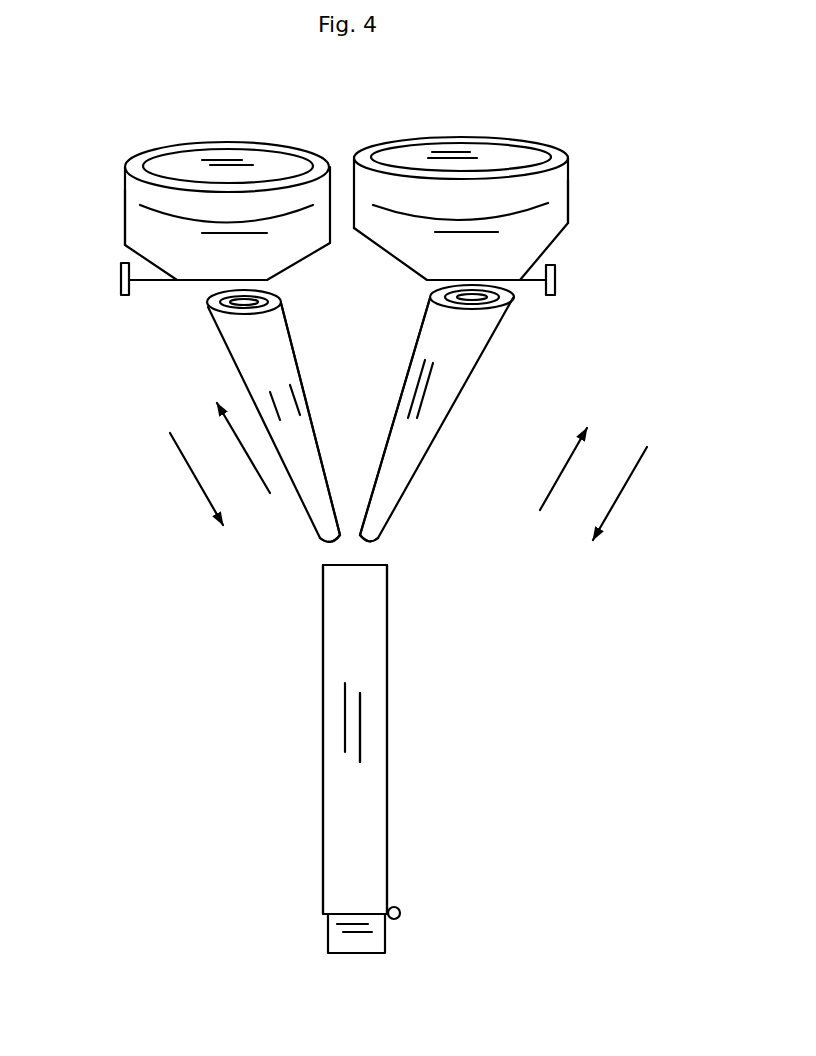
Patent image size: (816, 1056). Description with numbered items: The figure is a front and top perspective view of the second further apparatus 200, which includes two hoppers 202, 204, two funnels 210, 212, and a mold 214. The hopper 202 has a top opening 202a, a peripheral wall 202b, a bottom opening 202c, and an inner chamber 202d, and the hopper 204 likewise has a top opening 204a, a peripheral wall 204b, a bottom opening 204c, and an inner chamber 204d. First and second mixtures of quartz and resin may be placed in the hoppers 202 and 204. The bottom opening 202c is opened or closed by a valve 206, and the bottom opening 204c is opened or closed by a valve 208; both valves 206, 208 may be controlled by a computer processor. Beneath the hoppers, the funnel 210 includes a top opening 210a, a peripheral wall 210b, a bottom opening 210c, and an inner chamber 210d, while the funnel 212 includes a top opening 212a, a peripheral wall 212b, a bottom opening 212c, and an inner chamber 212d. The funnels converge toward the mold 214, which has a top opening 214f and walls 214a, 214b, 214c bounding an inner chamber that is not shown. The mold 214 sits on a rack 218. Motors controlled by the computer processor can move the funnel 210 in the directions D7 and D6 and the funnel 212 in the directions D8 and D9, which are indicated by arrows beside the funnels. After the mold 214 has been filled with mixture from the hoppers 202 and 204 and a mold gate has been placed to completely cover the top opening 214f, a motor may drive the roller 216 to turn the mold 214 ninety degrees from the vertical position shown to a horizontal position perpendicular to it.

The second further apparatus 200 is at (597, 173).
The hopper 202 is at (188, 165).
The top opening 202a is at (193, 163).
The peripheral wall 202b is at (148, 240).
The bottom opening 202c is at (268, 282).
The inner chamber 202d is at (268, 163).
The hopper 204 is at (532, 192).
The top opening 204a is at (415, 158).
The peripheral wall 204b is at (540, 223).
The bottom opening 204c is at (507, 282).
The inner chamber 204d is at (478, 153).
The valve 206 is at (120, 280).
The valve 208 is at (555, 280).
The funnel 210 is at (255, 363).
The top opening 210a is at (212, 300).
The peripheral wall 210b is at (292, 437).
The bottom opening 210c is at (332, 541).
The inner chamber 210d is at (218, 310).
The funnel 212 is at (408, 448).
The top opening 212a is at (473, 298).
The peripheral wall 212b is at (435, 420).
The bottom opening 212c is at (373, 541).
The inner chamber 212d is at (463, 297).
The mold 214 is at (350, 853).
The wall 214a is at (323, 788).
The wall 214b is at (377, 858).
The wall 214c is at (388, 784).
The top opening 214f is at (358, 565).
The roller 216 is at (400, 918).
The rack 218 is at (347, 940).
The direction D6 is at (237, 448).
The direction D7 is at (190, 479).
The direction D8 is at (569, 469).
The direction D9 is at (621, 493).